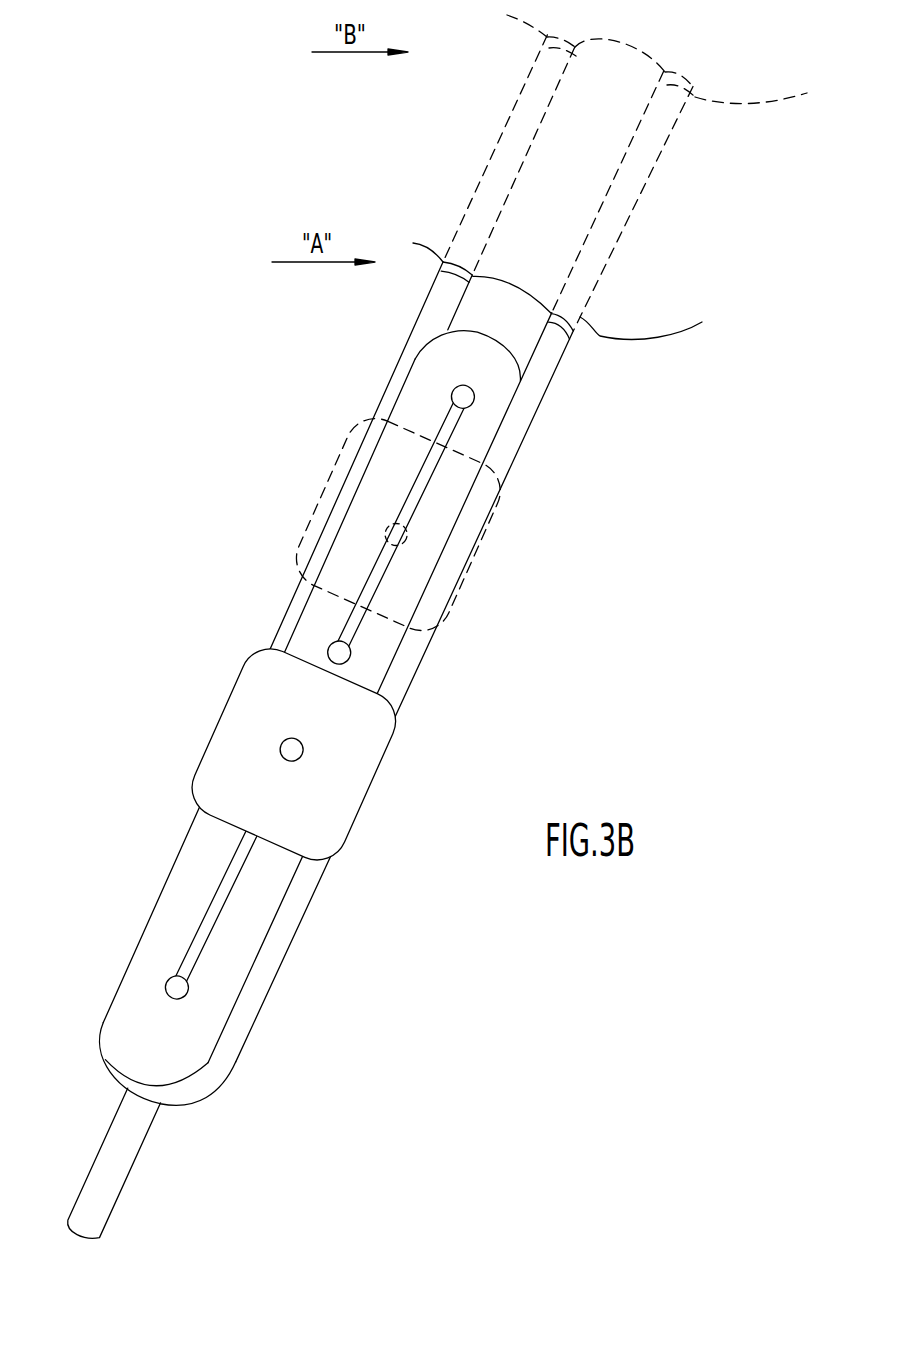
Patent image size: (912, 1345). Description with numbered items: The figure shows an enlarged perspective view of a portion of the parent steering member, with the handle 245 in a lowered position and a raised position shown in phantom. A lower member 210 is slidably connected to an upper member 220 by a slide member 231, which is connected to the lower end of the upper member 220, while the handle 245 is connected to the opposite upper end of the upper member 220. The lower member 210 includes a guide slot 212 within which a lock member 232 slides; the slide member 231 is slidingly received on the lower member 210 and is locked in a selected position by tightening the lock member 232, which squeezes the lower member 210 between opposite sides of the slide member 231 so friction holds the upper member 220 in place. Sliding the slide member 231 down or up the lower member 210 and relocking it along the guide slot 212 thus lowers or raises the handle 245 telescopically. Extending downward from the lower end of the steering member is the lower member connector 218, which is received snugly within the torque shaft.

The lower member 210 is at (490, 395).
The guide slot 212 is at (228, 912).
The lower member connector 218 is at (142, 1150).
The upper member 220 is at (637, 202).
The slide member 231 is at (490, 540).
The lock member 232 is at (303, 750).
The handle 245 is at (758, 105).